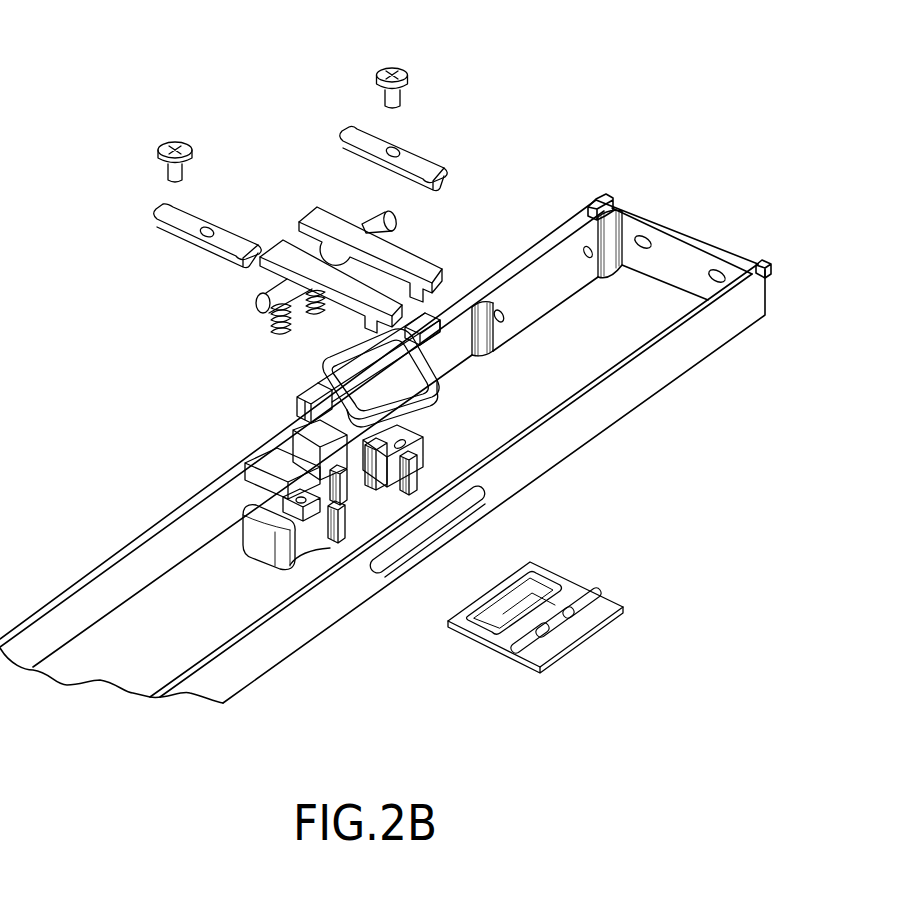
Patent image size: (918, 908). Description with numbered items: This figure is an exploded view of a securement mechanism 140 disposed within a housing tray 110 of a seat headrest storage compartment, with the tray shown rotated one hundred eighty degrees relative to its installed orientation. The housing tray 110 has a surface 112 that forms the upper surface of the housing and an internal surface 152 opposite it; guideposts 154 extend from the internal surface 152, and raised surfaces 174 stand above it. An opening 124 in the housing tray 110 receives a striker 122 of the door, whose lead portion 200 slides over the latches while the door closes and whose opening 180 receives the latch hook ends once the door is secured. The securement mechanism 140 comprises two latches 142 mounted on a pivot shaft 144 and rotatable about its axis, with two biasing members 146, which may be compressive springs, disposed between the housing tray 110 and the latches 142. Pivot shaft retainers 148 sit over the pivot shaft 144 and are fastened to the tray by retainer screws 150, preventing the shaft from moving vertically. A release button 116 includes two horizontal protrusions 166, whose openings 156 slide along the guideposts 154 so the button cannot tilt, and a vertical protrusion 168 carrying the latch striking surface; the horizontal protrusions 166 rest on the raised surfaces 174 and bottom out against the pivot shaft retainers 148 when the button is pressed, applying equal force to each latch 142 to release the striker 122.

The housing tray 110 is at (130, 543).
The surface 112 is at (603, 431).
The release button 116 is at (433, 369).
The striker 122 is at (600, 631).
The opening 124 is at (452, 506).
The securement mechanism 140 is at (105, 111).
The latches 142 is at (280, 252).
The pivot shaft 144 is at (387, 226).
The biasing members 146 is at (315, 315).
The pivot shaft retainers 148 is at (438, 152).
The retainer screws 150 is at (409, 80).
The internal surface 152 is at (215, 605).
The guideposts 154 is at (427, 464).
The openings 156 is at (331, 383).
The horizontal protrusions 166 is at (300, 418).
The vertical protrusion 168 is at (381, 378).
The raised surfaces 174 is at (412, 500).
The opening 180 is at (540, 596).
The lead portion 200 is at (464, 618).